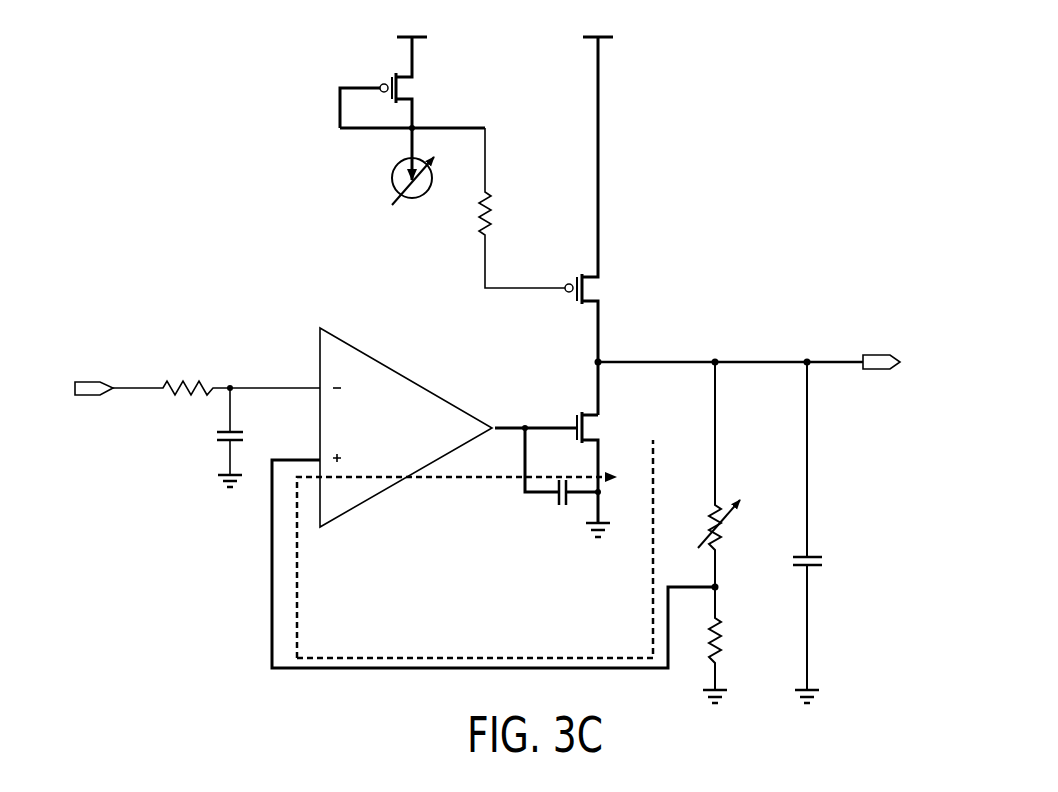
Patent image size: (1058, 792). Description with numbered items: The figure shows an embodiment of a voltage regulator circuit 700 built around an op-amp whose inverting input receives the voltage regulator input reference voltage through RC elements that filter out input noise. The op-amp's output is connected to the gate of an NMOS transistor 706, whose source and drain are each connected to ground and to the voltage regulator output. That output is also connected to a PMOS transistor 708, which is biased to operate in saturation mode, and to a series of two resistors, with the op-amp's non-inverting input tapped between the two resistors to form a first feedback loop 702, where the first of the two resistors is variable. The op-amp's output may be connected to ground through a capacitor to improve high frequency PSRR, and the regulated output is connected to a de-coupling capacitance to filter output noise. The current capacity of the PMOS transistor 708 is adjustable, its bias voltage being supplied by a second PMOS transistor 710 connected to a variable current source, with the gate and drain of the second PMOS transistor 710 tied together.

The voltage regulator circuit 700 is at (236, 303).
The first feedback loop 702 is at (633, 647).
The NMOS transistor 706 is at (600, 427).
The PMOS transistor 708 is at (600, 287).
The second PMOS transistor 710 is at (417, 87).